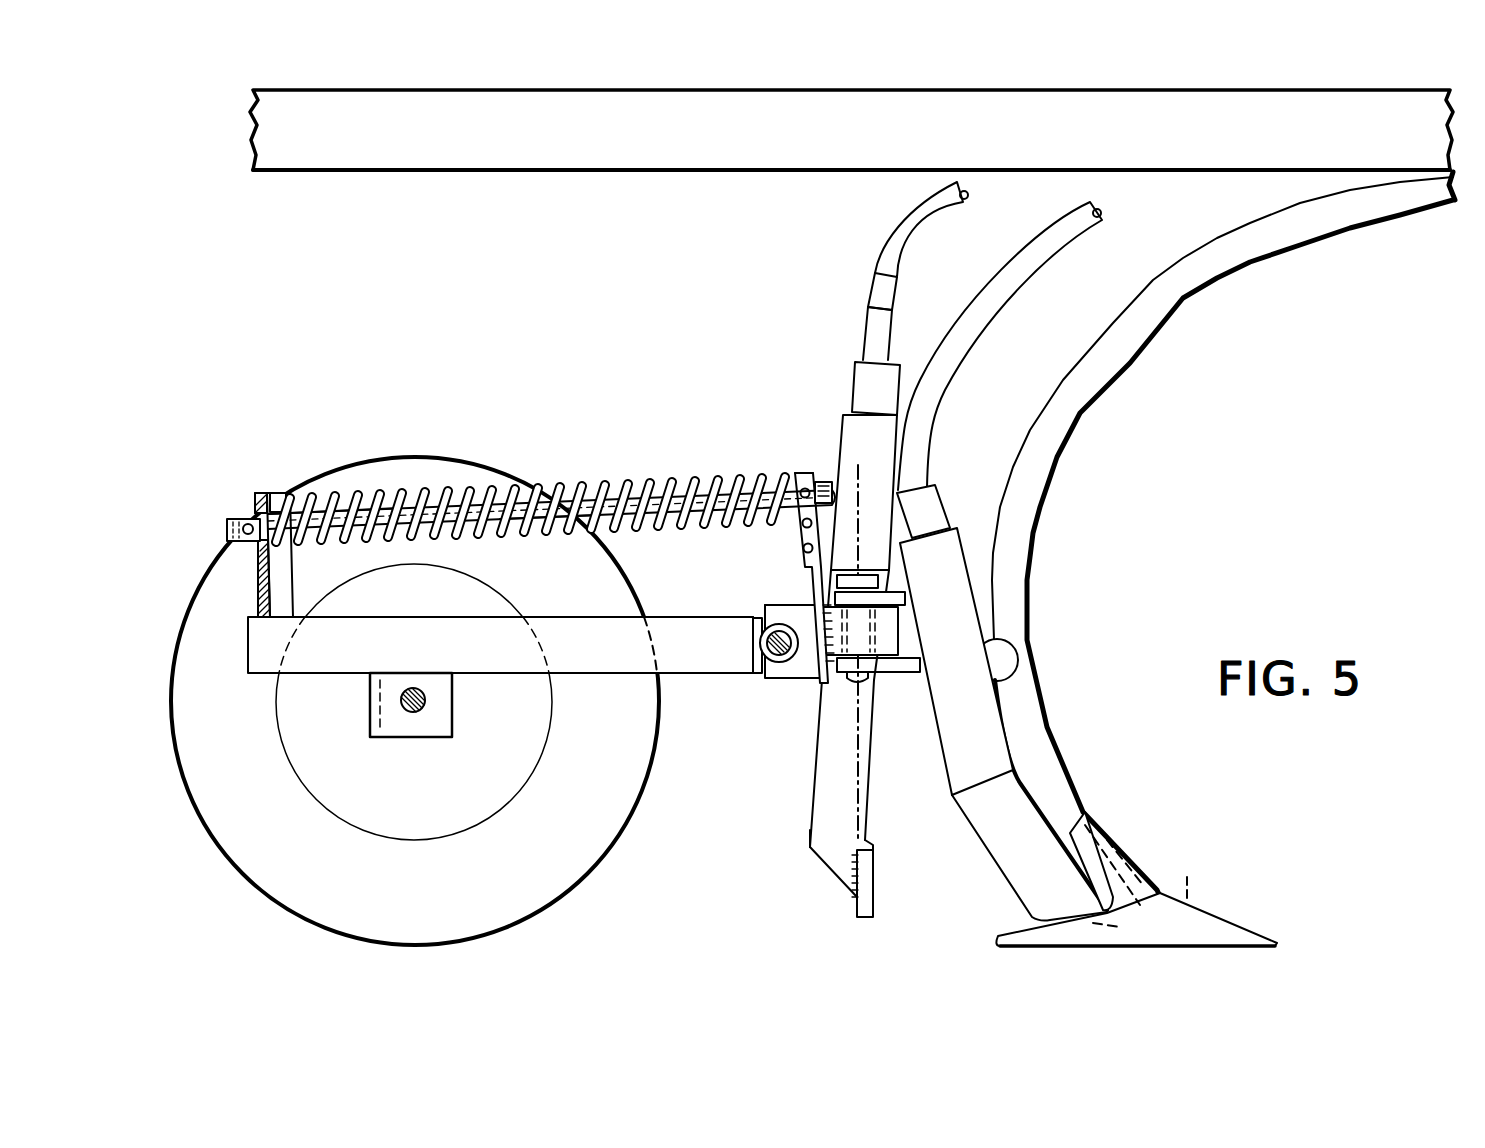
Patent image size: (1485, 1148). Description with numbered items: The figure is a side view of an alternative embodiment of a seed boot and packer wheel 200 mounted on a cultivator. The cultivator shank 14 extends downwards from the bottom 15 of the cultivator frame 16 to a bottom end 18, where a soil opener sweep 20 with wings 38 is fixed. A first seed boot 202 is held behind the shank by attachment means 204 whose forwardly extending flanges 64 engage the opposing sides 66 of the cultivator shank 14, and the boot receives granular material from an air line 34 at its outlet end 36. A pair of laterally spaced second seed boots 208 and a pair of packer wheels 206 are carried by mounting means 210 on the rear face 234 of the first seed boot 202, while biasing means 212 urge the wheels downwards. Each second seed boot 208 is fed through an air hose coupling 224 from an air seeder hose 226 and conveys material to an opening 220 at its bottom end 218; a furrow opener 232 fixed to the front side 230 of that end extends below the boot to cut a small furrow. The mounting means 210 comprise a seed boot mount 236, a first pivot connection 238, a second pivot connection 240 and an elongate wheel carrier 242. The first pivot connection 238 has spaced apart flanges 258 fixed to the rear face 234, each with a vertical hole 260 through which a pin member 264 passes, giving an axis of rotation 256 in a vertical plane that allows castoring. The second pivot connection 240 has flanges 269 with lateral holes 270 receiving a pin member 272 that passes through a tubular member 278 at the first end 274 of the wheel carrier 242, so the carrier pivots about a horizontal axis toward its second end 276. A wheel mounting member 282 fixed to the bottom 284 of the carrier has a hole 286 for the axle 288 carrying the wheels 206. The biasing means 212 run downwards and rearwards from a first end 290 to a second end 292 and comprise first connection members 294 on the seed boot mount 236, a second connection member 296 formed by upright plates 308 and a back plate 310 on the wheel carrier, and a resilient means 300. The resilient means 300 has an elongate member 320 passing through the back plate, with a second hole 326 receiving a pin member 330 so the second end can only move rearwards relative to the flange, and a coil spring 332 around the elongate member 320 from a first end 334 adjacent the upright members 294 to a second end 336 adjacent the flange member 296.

The cultivator shank 14 is at (1243, 264).
The bottom of the cultivator frame 15 is at (622, 173).
The cultivator frame 16 is at (432, 174).
The bottom end of the cultivator shank 18 is at (1188, 880).
The soil opener sweep 20 is at (1226, 915).
The air line 34 is at (1040, 282).
The outlet end of the air line 36 is at (932, 503).
The wings of the sweep 38 is at (1002, 935).
The forwardly extending flanges 64 is at (1019, 657).
The opposing sides of the cultivator shank 66 is at (1013, 537).
The seed boot and packer wheel 200 is at (678, 350).
The first seed boot 202 is at (979, 585).
The attachment means 204 is at (1105, 824).
The packer wheels 206 is at (572, 895).
The second seed boots 208 is at (840, 428).
The mounting means 210 is at (806, 702).
The biasing means 212 is at (572, 424).
The bottom end of the second seed boot 218 is at (822, 840).
The opening 220 is at (836, 880).
The air hose coupling 224 is at (858, 377).
The air seeder hose 226 is at (900, 218).
The front side of the bottom end 230 is at (864, 841).
The furrow opener 232 is at (872, 915).
The rear face of the first seed boot 234 is at (936, 757).
The seed boot mount 236 is at (901, 631).
The first pivot connection 238 is at (894, 692).
The second pivot connection 240 is at (741, 600).
The wheel carrier member 242 is at (596, 681).
The axis of rotation 256 is at (853, 737).
The spaced apart flanges 258 is at (905, 583).
The hole 260 is at (905, 641).
The pin member 264 is at (800, 530).
The spaced apart flanges 269 is at (795, 607).
The hole 270 is at (753, 641).
The pin member 272 is at (760, 660).
The first end of the wheel carrier member 274 is at (746, 615).
The second end of the wheel carrier member 276 is at (258, 661).
The tubular member 278 is at (792, 680).
The wheel mounting member 282 is at (441, 727).
The bottom of the wheel carrier member 284 is at (466, 680).
The hole 286 is at (401, 735).
The axle 288 is at (413, 690).
The first end 290 is at (841, 422).
The second end 292 is at (246, 521).
The first connection members 294 is at (806, 470).
The second connection member 296 is at (298, 597).
The resilient means 300 is at (633, 478).
The upright plates 308 is at (285, 580).
The back plate 310 is at (265, 580).
The elongate member 320 is at (588, 490).
The second hole 326 is at (262, 493).
The pin member 330 is at (242, 544).
The coil spring 332 is at (548, 538).
The first end of the coil spring 334 is at (790, 490).
The second end of the coil spring 336 is at (286, 492).